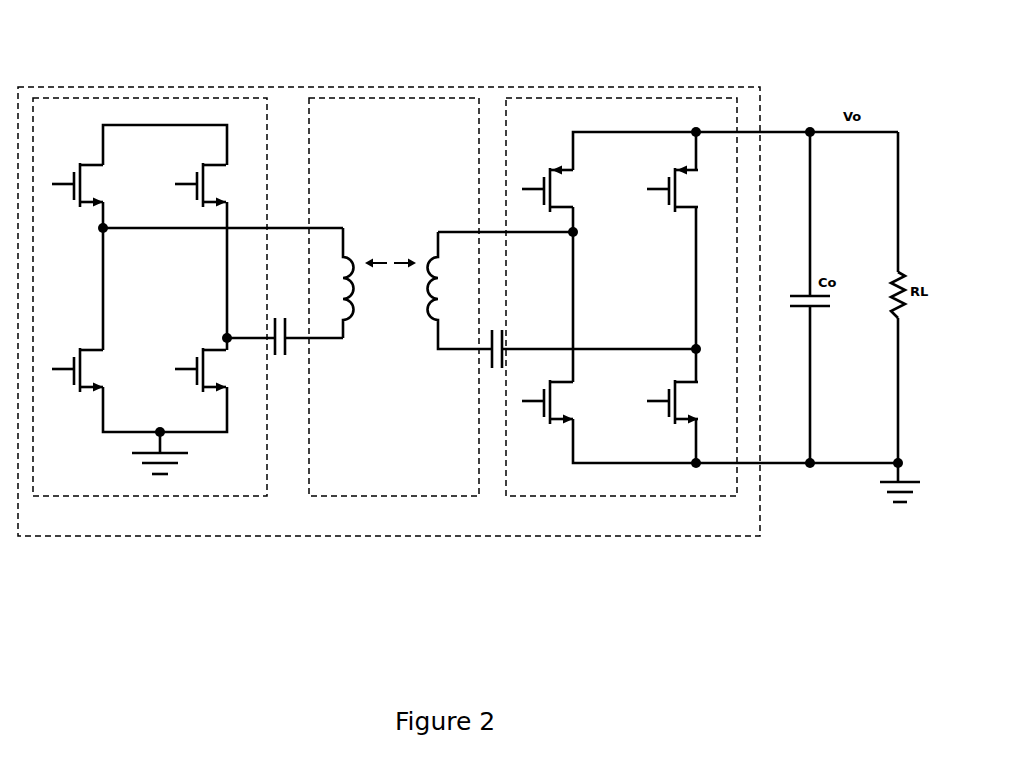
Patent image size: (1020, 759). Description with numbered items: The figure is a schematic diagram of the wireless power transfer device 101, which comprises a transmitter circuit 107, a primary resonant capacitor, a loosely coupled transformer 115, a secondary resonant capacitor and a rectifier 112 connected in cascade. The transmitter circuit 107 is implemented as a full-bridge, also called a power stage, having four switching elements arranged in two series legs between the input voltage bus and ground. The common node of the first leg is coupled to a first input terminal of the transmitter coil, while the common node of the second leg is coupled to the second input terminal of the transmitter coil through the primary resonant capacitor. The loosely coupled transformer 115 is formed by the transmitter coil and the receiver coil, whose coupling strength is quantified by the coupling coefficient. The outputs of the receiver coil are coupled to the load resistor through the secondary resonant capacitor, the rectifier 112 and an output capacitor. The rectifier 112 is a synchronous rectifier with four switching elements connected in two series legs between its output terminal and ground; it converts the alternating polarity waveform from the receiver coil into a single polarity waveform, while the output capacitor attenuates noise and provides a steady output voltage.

The wireless power transfer device 101 is at (397, 526).
The transmitter circuit 107 is at (73, 482).
The loosely coupled transformer 115 is at (399, 481).
The rectifier 112 is at (541, 487).